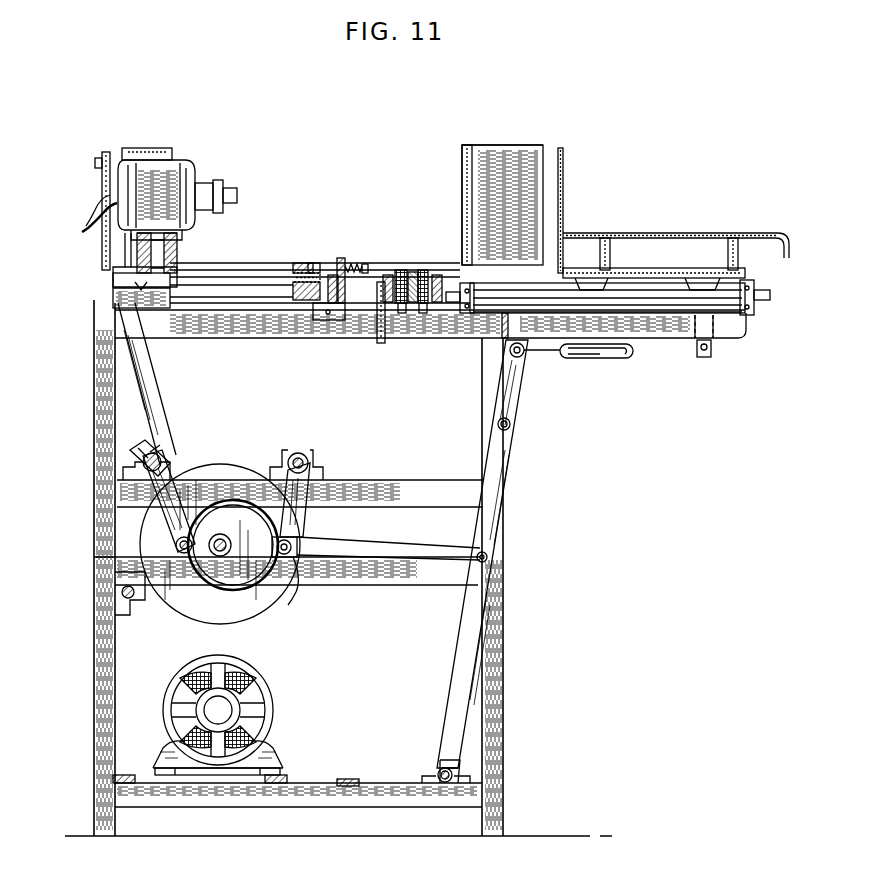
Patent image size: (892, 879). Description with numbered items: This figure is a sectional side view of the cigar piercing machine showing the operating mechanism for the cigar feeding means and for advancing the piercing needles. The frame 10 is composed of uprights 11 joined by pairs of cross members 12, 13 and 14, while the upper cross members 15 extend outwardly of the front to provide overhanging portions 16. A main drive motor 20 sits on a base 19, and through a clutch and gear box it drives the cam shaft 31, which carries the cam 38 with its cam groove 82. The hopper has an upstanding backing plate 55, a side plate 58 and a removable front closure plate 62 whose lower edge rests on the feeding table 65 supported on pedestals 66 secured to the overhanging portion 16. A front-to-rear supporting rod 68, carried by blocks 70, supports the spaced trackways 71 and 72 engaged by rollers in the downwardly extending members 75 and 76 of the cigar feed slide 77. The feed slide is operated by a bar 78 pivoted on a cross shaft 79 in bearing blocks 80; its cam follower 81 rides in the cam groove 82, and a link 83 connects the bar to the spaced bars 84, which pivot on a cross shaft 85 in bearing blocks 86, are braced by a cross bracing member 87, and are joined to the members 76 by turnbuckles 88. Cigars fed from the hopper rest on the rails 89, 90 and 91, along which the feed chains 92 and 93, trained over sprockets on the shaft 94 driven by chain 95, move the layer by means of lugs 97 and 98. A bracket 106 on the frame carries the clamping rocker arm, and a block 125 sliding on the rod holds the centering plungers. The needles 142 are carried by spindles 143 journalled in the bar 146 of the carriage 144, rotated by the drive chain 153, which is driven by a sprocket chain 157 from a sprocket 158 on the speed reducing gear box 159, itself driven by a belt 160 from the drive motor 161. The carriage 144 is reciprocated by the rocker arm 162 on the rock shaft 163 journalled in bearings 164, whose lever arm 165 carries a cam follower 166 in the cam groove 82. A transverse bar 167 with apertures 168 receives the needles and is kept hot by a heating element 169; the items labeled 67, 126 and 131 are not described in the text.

The frame 10 is at (91, 358).
The uprights 11 is at (100, 742).
The cross members 12 is at (338, 808).
The cross members 13 is at (432, 583).
The cross members 14 is at (433, 490).
The upper cross members 15 is at (233, 340).
The overhanging portions 16 is at (731, 339).
The base 19 is at (288, 775).
The main drive motor 20 is at (270, 700).
The cam shaft 31 is at (226, 553).
The cam 38 is at (184, 605).
The backing plate 55 is at (462, 150).
The side plate 58 is at (518, 150).
The front closure plate 62 is at (564, 176).
The feeding table 65 is at (668, 232).
The pedestals 66 is at (606, 238).
The hopper wall 67 is at (472, 150).
The supporting rod 68 is at (770, 300).
The blocks 70 is at (755, 295).
The trackway 71 is at (678, 314).
The trackway 72 is at (655, 284).
The downwardly extending member 75 is at (592, 277).
The downwardly extending member 76 is at (711, 357).
The cigar feed slide 77 is at (712, 277).
The bar 78 is at (304, 515).
The cross shaft 79 is at (308, 460).
The bearing blocks 80 is at (319, 476).
The cam follower 81 is at (296, 566).
The cam groove 82 is at (293, 590).
The link 83 is at (384, 549).
The spaced bars 84 is at (500, 462).
The cross shaft 85 is at (437, 773).
The bearing blocks 86 is at (436, 762).
The cross bracing member 87 is at (511, 425).
The turnbuckles 88 is at (608, 358).
The rail 89 is at (438, 275).
The central rail 90 is at (413, 272).
The rail 91 is at (386, 275).
The feed chain 92 is at (425, 314).
The feed chain 93 is at (404, 314).
The shaft 94 is at (453, 305).
The chain 95 is at (378, 341).
The lug 97 is at (424, 270).
The lug 98 is at (401, 270).
The bracket 106 is at (117, 598).
The block 125 is at (342, 258).
The spring 126 is at (364, 264).
The slide block 131 is at (333, 275).
The needles 142 is at (262, 263).
The spindles 143 is at (177, 263).
The carriage 144 is at (157, 293).
The bar 146 is at (177, 246).
The drive chain 153 is at (92, 236).
The sprocket chain 157 is at (105, 152).
The sprocket 158 is at (95, 162).
The speed reducing gear box 159 is at (146, 150).
The belt 160 is at (222, 186).
The drive motor 161 is at (186, 170).
The rocker arm 162 is at (147, 374).
The rock shaft 163 is at (159, 455).
The bearings 164 is at (167, 480).
The lever arm 165 is at (171, 508).
The cam follower 166 is at (178, 554).
The bar 167 is at (314, 263).
The apertures 168 is at (298, 263).
The heating element 169 is at (293, 281).